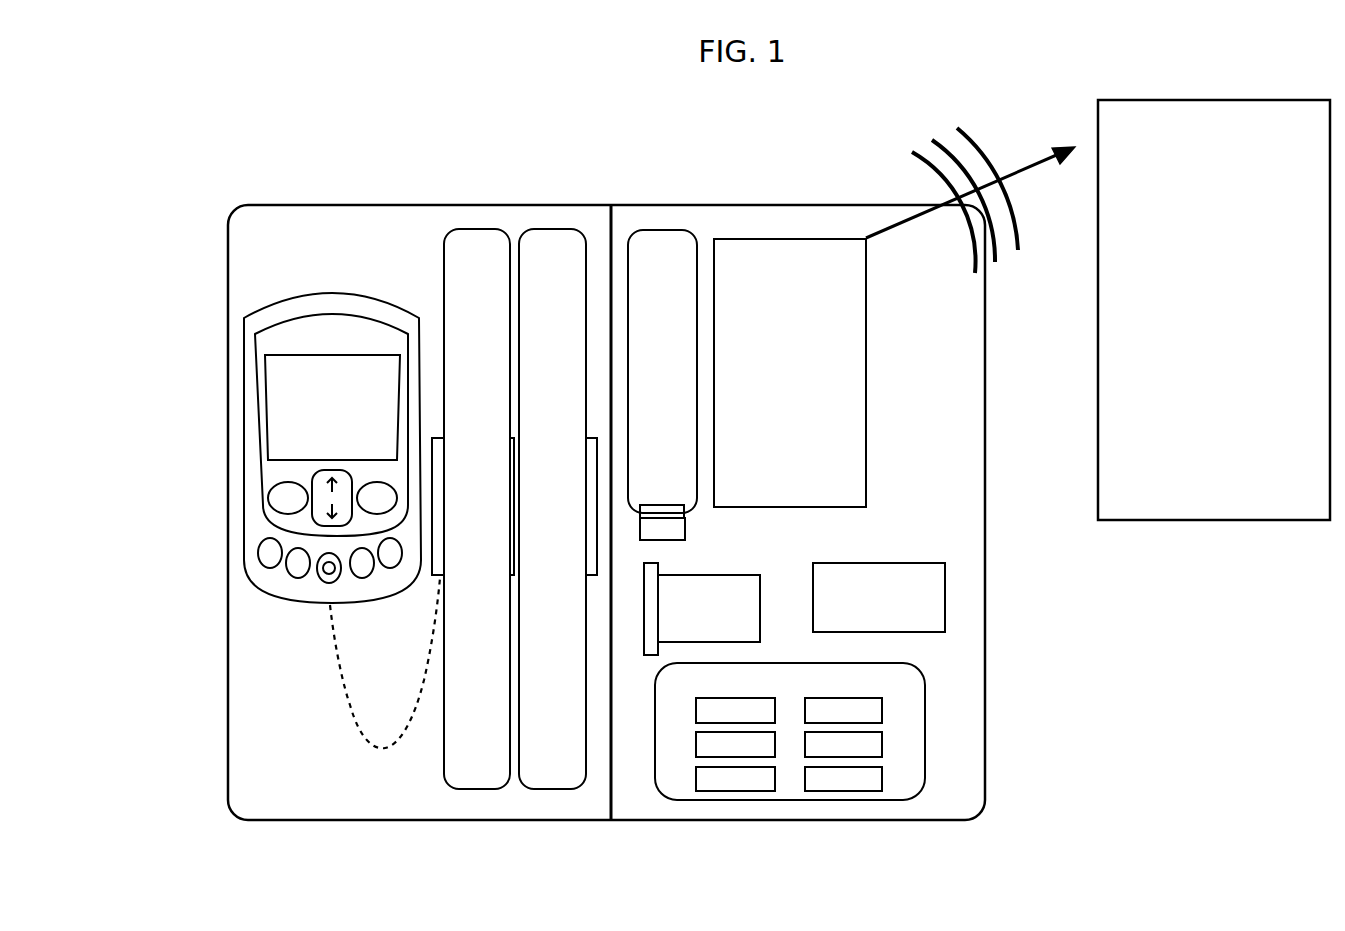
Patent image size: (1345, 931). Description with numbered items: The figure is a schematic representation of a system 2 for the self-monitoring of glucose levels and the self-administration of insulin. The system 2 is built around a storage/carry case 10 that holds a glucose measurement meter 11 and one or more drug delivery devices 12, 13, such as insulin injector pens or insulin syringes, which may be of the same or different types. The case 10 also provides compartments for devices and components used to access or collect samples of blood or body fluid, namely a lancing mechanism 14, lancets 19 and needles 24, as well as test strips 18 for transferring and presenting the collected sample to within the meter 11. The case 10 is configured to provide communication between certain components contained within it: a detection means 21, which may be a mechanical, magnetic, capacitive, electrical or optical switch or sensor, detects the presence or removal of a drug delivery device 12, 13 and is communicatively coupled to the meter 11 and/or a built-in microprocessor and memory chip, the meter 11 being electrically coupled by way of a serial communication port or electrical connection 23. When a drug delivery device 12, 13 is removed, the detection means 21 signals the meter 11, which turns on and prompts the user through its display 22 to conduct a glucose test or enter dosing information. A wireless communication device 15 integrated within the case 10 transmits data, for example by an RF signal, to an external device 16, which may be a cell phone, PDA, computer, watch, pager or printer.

The system 2 is at (286, 138).
The storage/carry case 10 is at (228, 640).
The glucose measurement meter 11 is at (250, 407).
The drug delivery device 12 is at (483, 237).
The drug delivery device 13 is at (557, 237).
The lancing mechanism 14 is at (668, 237).
The wireless communication device 15 is at (797, 240).
The external device 16 is at (1096, 458).
The test strips 18 is at (732, 572).
The lancets 19 is at (905, 726).
The detection means 21 is at (437, 470).
The display 22 is at (312, 430).
The electrical connection 23 is at (347, 703).
The needles 24 is at (880, 562).